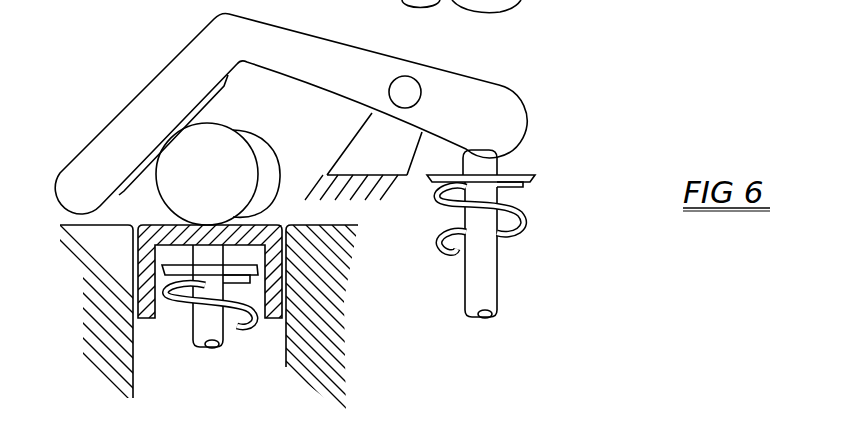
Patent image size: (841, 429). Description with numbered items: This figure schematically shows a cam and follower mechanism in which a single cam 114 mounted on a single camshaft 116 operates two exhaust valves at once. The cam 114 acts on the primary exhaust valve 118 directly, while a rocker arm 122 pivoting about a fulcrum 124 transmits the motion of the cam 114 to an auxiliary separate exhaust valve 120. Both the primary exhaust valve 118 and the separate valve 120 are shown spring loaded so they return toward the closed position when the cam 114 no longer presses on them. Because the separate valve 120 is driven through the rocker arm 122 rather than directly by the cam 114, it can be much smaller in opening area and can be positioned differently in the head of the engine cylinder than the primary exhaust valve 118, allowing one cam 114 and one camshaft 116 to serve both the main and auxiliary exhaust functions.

The cam 114 is at (275, 147).
The camshaft 116 is at (210, 123).
The primary exhaust valve 118 is at (227, 337).
The auxiliary separate exhaust valve 120 is at (497, 268).
The rocker arm 122 is at (182, 50).
The fulcrum 124 is at (410, 83).